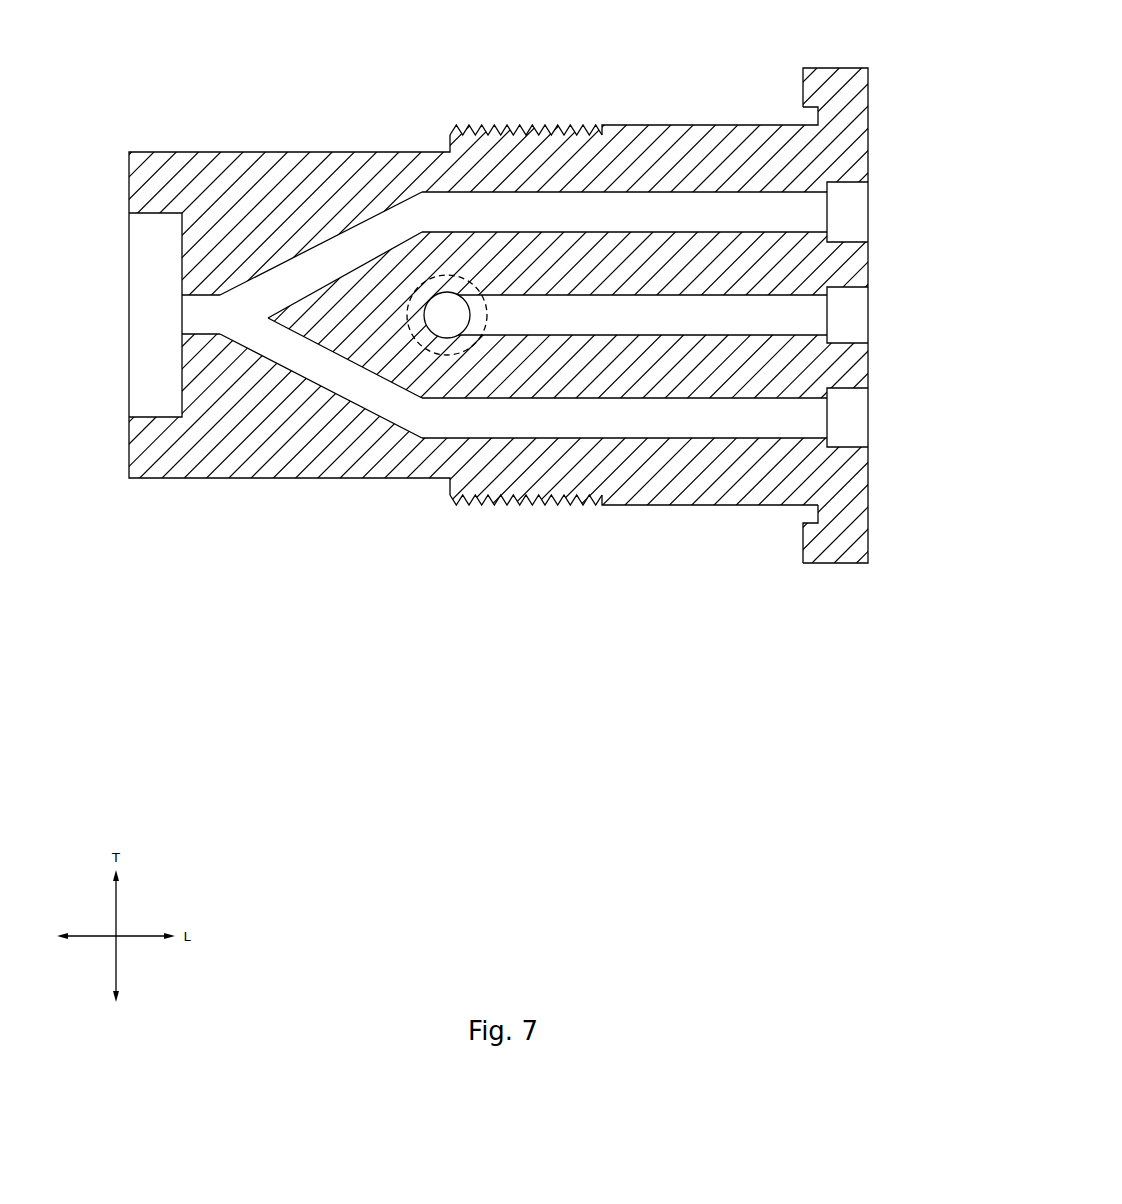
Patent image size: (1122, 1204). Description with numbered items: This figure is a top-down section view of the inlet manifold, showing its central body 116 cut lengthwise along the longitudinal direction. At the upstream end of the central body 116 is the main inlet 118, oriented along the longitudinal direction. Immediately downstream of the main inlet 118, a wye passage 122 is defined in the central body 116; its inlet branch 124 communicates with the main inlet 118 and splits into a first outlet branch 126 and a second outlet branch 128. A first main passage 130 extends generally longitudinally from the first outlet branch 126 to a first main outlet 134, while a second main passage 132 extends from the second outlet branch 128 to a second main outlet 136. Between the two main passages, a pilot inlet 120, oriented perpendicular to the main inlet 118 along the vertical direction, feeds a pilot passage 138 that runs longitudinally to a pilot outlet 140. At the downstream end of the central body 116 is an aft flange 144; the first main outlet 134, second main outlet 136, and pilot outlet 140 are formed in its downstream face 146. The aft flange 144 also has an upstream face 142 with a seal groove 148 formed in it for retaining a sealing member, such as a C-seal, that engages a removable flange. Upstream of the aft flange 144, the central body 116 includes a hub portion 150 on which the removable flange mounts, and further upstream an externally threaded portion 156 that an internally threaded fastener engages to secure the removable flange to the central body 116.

The central body 116 is at (285, 178).
The main inlet 118 is at (148, 328).
The pilot inlet 120 is at (440, 338).
The wye passage 122 is at (272, 446).
The inlet branch 124 is at (190, 327).
The first outlet branch 126 is at (321, 378).
The second outlet branch 128 is at (321, 255).
The first main passage 130 is at (685, 428).
The second main passage 132 is at (685, 222).
The first main outlet 134 is at (848, 420).
The second main outlet 136 is at (845, 212).
The pilot passage 138 is at (685, 328).
The pilot outlet 140 is at (848, 318).
The upstream face 142 is at (803, 543).
The aft flange 144 is at (835, 80).
The downstream face 146 is at (872, 531).
The seal groove 148 is at (805, 512).
The hub portion 150 is at (602, 113).
The externally threaded portion 156 is at (450, 113).